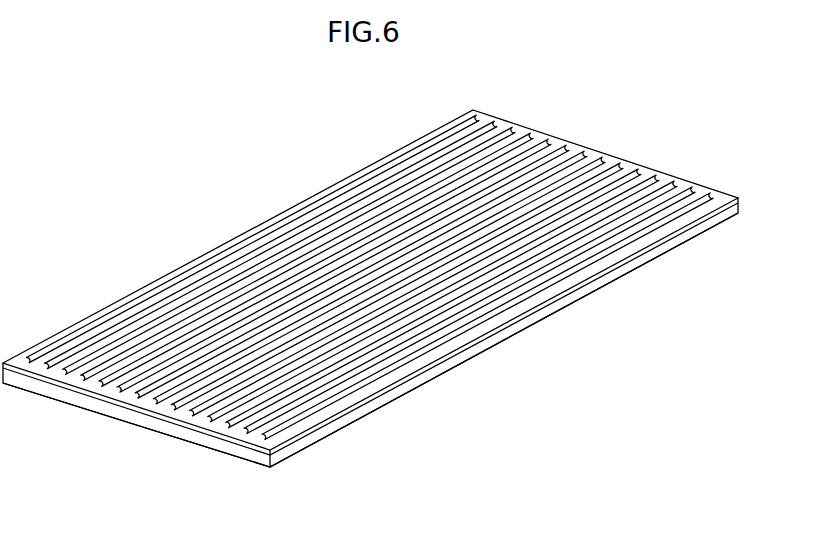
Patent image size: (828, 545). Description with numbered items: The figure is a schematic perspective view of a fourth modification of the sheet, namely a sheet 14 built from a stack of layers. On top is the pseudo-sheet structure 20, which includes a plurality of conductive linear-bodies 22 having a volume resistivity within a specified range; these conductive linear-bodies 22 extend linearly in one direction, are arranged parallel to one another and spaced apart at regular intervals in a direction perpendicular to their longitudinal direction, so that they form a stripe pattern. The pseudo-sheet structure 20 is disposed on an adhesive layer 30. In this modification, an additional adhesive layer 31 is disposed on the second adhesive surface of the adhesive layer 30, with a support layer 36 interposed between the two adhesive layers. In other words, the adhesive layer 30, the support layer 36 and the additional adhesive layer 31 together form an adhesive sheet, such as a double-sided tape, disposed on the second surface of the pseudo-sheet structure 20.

The sheet 14 is at (370, 305).
The pseudo-sheet structure 20 is at (100, 232).
The conductive linear-bodies 22 is at (193, 420).
The adhesive layer 30 is at (297, 437).
The additional adhesive layer 31 is at (417, 390).
The support layer 36 is at (367, 417).